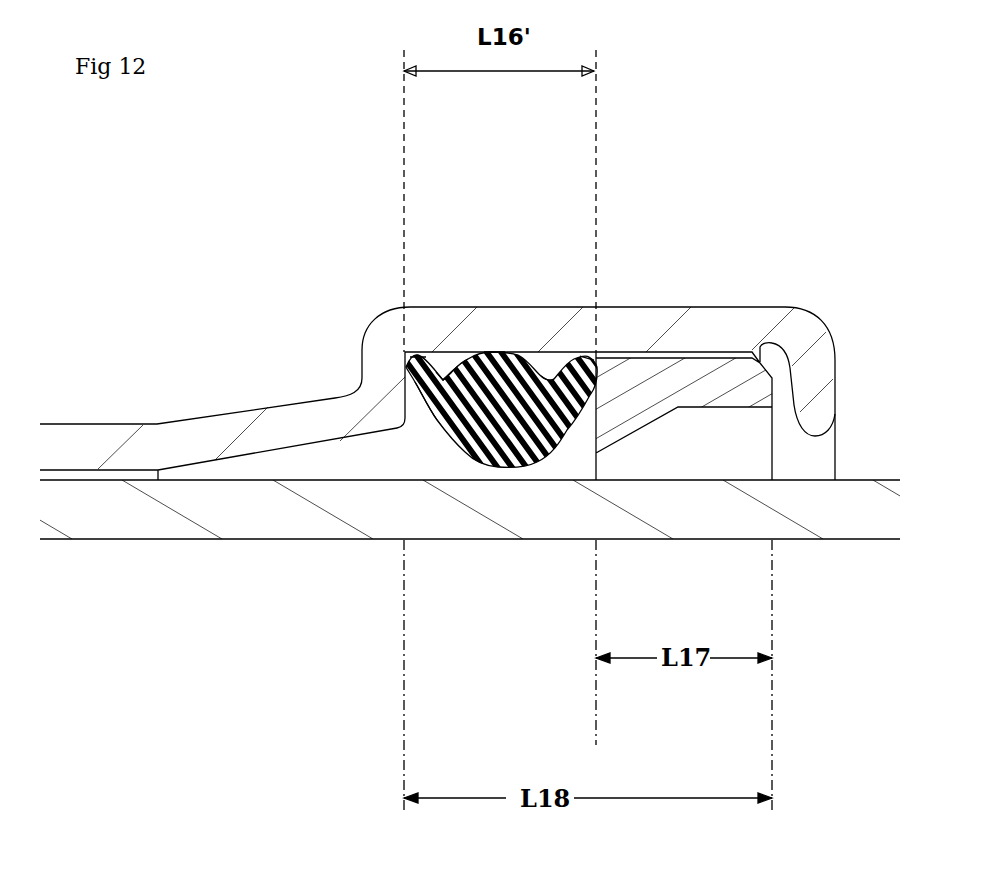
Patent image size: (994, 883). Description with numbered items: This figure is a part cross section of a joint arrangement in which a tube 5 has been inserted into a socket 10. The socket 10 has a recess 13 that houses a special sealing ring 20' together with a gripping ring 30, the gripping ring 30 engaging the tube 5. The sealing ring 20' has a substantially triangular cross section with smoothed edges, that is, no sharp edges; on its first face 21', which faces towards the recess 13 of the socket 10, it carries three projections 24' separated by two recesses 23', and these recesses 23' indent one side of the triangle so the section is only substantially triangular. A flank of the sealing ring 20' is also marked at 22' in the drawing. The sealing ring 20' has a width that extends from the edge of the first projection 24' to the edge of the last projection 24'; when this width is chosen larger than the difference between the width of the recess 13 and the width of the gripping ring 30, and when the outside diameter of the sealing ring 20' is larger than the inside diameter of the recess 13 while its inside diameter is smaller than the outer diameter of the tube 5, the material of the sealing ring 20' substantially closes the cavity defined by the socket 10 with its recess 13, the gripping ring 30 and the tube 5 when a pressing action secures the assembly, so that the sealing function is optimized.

The tube 5 is at (826, 506).
The socket 10 is at (190, 428).
The recess 13 is at (613, 348).
The gripping ring 30 is at (650, 383).
The sealing ring 20' is at (514, 335).
The first face 21' is at (443, 288).
The side flank of sealing element 22' is at (317, 497).
The recesses 23' is at (476, 303).
The projections 24' is at (501, 504).